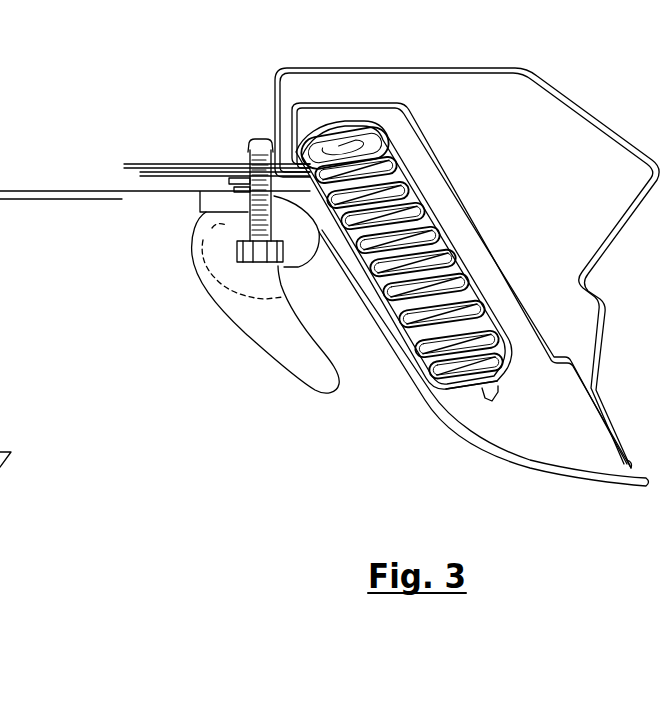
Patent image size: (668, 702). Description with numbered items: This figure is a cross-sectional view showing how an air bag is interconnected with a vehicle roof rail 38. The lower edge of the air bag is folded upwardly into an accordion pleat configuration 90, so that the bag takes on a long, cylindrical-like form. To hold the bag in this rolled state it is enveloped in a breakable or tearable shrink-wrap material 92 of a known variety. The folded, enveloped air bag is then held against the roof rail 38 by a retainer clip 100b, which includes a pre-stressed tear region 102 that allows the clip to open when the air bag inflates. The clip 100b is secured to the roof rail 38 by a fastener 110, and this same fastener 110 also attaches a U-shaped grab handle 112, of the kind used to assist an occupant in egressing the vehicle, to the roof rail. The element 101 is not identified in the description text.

The roof rail 38 is at (338, 104).
The accordion pleat configuration 90 is at (404, 215).
The shrink-wrap material 92 is at (476, 298).
The retainer clip 100b is at (446, 386).
The lower panel 101 is at (427, 386).
The pre-stressed tear region 102 is at (486, 398).
The fastener 110 is at (251, 139).
The grab handle 112 is at (243, 307).